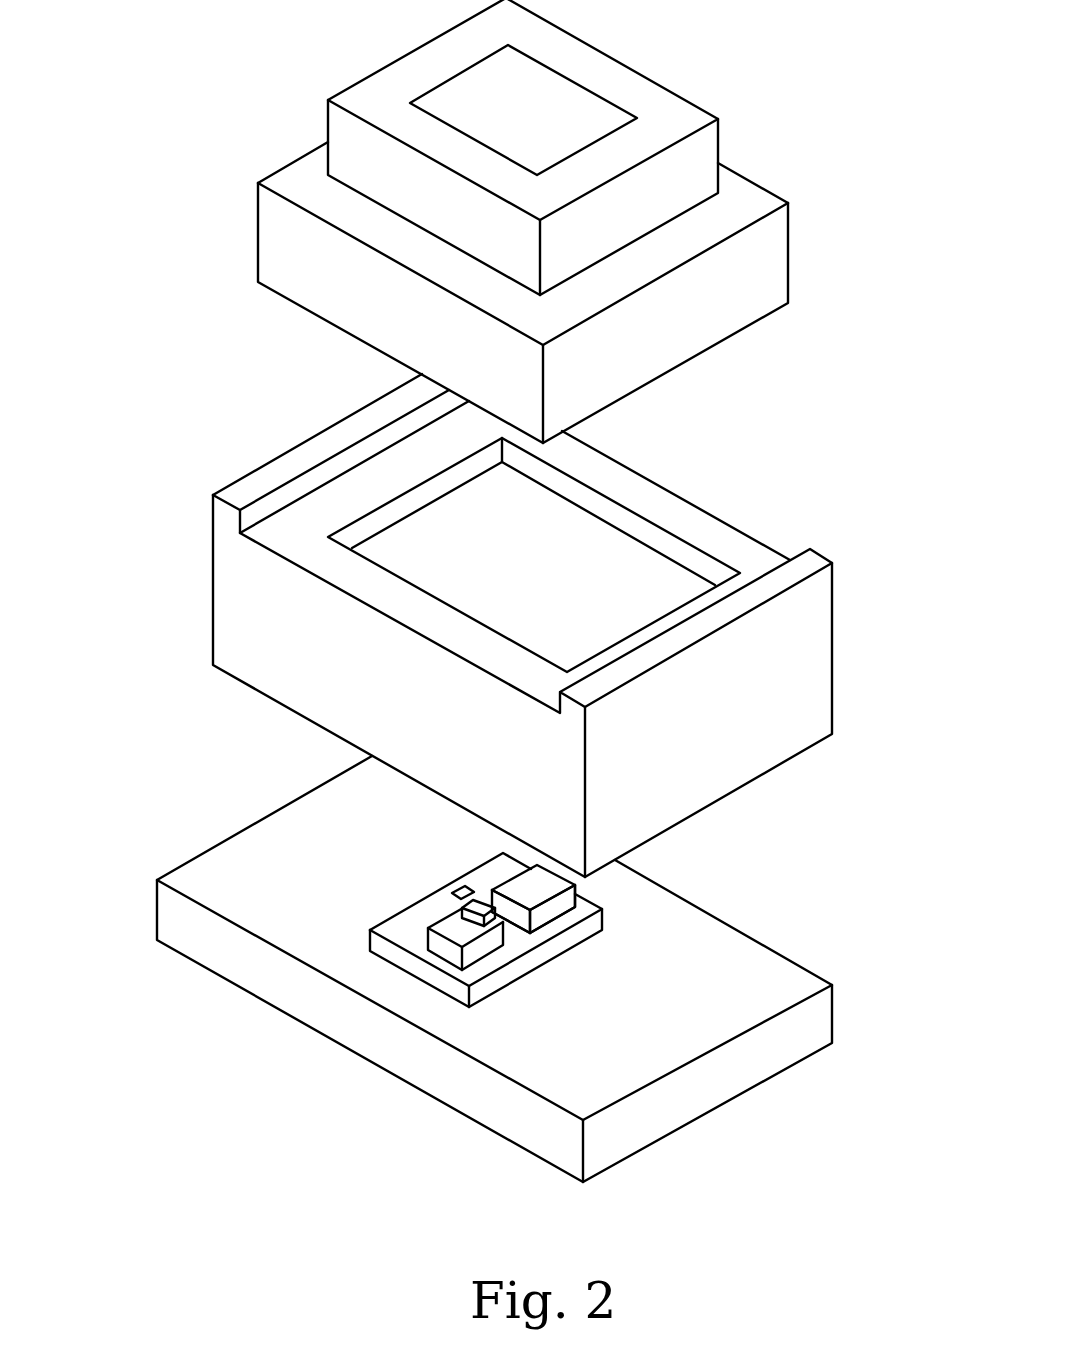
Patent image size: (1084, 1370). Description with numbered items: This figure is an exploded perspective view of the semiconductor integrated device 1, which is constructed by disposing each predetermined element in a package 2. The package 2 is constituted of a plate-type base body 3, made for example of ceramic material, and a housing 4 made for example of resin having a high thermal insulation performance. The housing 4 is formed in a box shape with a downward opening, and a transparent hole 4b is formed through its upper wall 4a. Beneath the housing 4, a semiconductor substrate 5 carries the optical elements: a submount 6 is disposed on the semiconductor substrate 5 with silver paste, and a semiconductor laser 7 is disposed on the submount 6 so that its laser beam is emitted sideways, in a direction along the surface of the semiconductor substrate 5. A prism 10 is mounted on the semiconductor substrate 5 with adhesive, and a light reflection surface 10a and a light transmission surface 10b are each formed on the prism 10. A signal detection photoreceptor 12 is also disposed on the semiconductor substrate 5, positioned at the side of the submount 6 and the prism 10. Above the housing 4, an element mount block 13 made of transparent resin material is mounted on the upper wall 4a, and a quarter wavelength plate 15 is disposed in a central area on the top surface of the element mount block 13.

The semiconductor integrated device 1 is at (182, 158).
The package 2 is at (501, 778).
The base body 3 is at (705, 933).
The housing 4 is at (522, 625).
The upper wall 4a is at (683, 522).
The transparent hole 4b is at (573, 492).
The semiconductor substrate 5 is at (448, 982).
The submount 6 is at (460, 937).
The semiconductor laser 7 is at (488, 914).
The prism 10 is at (600, 1039).
The light reflection surface 10a is at (520, 907).
The light transmission surface 10b is at (525, 925).
The signal detection photoreceptor 12 is at (463, 890).
The element mount block 13 is at (565, 221).
The quarter wavelength plate 15 is at (595, 123).